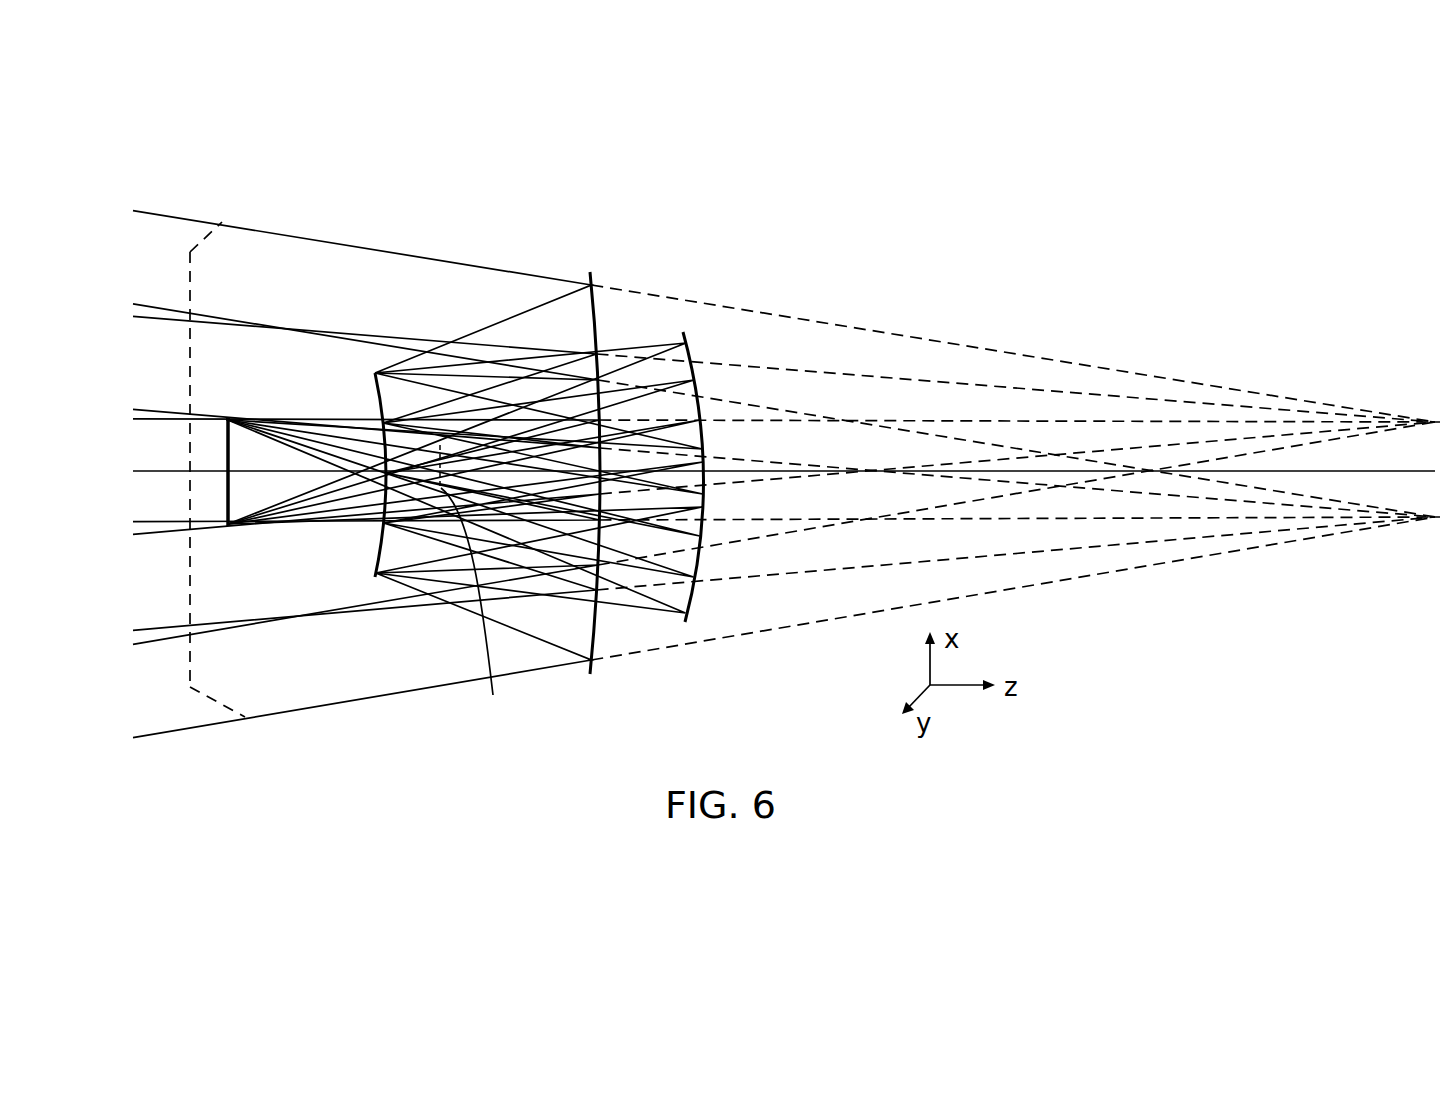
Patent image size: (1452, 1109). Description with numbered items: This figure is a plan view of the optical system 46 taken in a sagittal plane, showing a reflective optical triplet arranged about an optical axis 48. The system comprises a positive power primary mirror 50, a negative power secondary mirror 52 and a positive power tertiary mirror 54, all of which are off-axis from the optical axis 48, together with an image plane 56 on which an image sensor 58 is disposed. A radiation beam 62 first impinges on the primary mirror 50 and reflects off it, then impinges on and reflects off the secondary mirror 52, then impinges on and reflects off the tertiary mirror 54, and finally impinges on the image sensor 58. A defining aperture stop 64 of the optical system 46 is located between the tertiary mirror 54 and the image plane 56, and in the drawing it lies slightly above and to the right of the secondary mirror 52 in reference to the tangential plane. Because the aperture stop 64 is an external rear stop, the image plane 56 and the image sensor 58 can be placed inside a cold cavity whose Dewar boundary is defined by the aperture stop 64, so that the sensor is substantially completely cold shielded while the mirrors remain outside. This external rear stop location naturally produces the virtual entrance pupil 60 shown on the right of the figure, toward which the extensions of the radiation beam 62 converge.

The optical system 46 is at (722, 326).
The optical axis 48 is at (795, 472).
The primary mirror 50 is at (594, 637).
The secondary mirror 52 is at (376, 557).
The tertiary mirror 54 is at (703, 386).
The image plane 56 is at (227, 501).
The image sensor 58 is at (231, 426).
The virtual entrance pupil 60 is at (1437, 420).
The radiation beam 62 is at (211, 469).
The aperture stop 64 is at (493, 695).